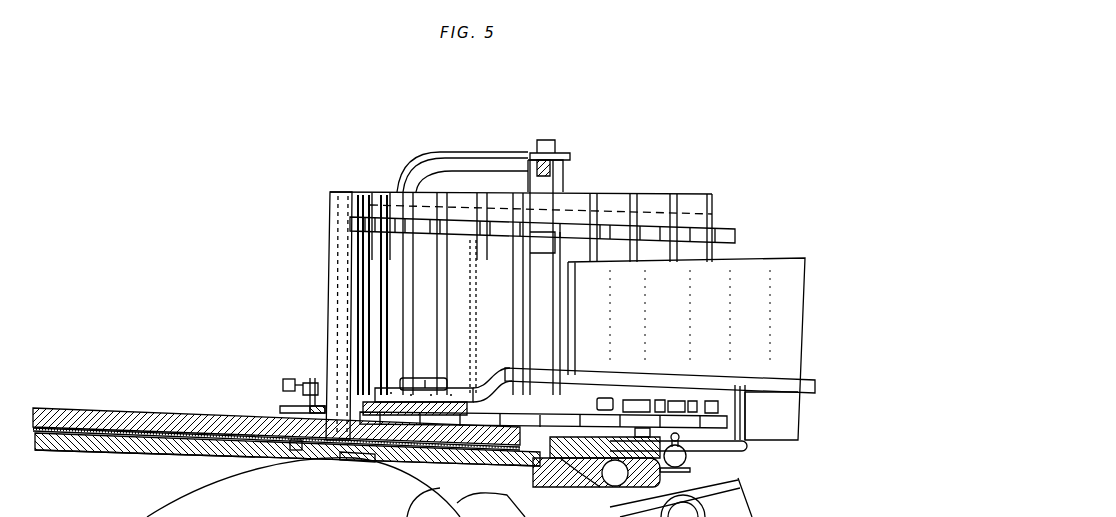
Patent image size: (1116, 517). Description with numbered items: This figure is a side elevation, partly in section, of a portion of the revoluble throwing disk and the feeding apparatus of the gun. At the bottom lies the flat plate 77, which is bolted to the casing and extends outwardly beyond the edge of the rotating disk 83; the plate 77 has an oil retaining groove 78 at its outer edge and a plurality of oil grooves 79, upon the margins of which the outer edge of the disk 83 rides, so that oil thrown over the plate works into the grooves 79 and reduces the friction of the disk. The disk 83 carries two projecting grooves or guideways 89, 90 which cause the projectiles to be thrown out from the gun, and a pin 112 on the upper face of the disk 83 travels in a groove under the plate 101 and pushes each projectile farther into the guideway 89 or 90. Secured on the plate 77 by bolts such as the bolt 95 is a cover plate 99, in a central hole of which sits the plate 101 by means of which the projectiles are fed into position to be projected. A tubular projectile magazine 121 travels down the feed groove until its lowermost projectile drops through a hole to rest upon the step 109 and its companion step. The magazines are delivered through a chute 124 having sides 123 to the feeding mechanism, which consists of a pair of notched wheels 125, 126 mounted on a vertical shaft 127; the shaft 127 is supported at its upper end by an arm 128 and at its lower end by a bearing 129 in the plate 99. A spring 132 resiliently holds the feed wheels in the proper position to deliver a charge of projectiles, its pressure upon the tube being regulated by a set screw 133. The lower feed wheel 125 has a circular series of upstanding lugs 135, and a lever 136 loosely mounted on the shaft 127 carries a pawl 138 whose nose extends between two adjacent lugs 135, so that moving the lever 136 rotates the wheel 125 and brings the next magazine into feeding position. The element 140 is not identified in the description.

The flat plate 77 is at (568, 488).
The oil retaining groove 78 is at (620, 476).
The oil grooves 79 is at (572, 473).
The rotating disk 83 is at (185, 446).
The projecting groove or guideway 89 is at (97, 430).
The projecting groove or guideway 90 is at (173, 440).
The bolt 95 is at (647, 508).
The cover plate 99 is at (165, 422).
The plate 101 is at (285, 411).
The step 109 is at (368, 462).
The pin 112 is at (300, 449).
The tubular projectile magazine 121 is at (345, 285).
The sides 123 is at (752, 279).
The chute 124 is at (770, 226).
The lower feed wheel 125 is at (718, 418).
The notched wheel 126 is at (713, 233).
The vertical shaft 127 is at (560, 186).
The arm 128 is at (493, 163).
The bearing 129 is at (507, 443).
The spring 132 is at (312, 380).
The set screw 133 is at (284, 380).
The upstanding lugs 135 is at (603, 392).
The lever 136 is at (660, 376).
The pawl 138 is at (400, 379).
The bar 140 is at (746, 418).